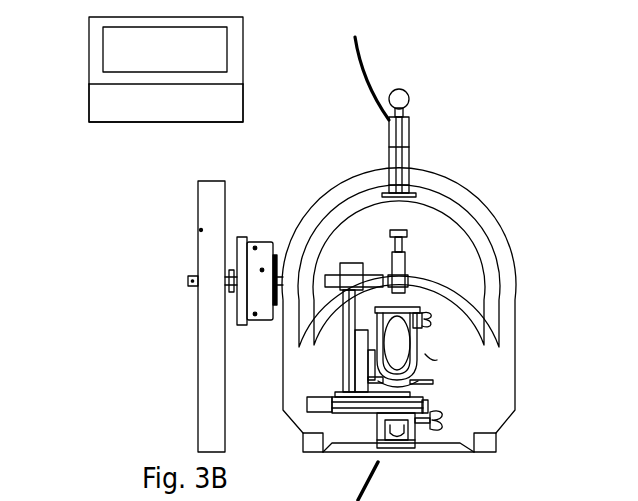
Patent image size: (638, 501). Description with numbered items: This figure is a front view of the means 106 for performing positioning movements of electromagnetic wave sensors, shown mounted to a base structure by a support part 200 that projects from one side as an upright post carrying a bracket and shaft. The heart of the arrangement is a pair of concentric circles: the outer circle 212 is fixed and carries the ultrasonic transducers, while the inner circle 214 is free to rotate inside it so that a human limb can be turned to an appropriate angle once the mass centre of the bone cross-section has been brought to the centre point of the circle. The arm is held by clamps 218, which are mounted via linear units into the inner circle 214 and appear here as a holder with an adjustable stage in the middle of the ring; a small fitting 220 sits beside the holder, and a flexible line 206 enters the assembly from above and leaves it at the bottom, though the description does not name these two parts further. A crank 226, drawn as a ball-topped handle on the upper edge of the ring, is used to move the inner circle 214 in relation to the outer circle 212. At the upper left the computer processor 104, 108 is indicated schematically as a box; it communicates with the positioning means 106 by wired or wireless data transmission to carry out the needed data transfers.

The computer processor 104 is at (78, 107).
The computer processor 108 is at (70, 118).
The means for performing positioning movements of electromagnetic wave sensors 106 is at (588, 121).
The support part 200 is at (193, 252).
The cable 206 is at (368, 42).
The outer circle 212 is at (478, 225).
The inner circle 214 is at (478, 272).
The clamps 218 is at (422, 357).
The clamp 220 is at (433, 363).
The crank 226 is at (410, 92).